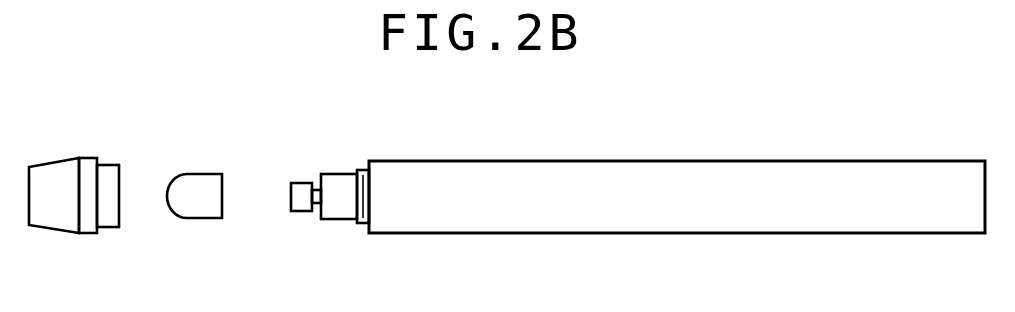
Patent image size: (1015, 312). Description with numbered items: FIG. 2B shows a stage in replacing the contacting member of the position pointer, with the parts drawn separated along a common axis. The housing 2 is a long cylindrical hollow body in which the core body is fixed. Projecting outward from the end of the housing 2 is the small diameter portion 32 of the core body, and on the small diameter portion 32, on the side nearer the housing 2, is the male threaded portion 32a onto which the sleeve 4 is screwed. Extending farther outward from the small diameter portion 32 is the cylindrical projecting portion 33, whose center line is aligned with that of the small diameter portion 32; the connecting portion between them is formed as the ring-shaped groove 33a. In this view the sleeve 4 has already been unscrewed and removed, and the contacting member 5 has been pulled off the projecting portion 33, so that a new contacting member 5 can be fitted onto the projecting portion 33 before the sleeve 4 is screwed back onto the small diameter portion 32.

The housing 2 is at (658, 177).
The sleeve 4 is at (58, 177).
The contacting member 5 is at (198, 176).
The small diameter portion 32 is at (337, 180).
The male threaded portion 32a is at (365, 168).
The projecting portion 33 is at (302, 200).
The ring-shaped groove 33a is at (317, 181).